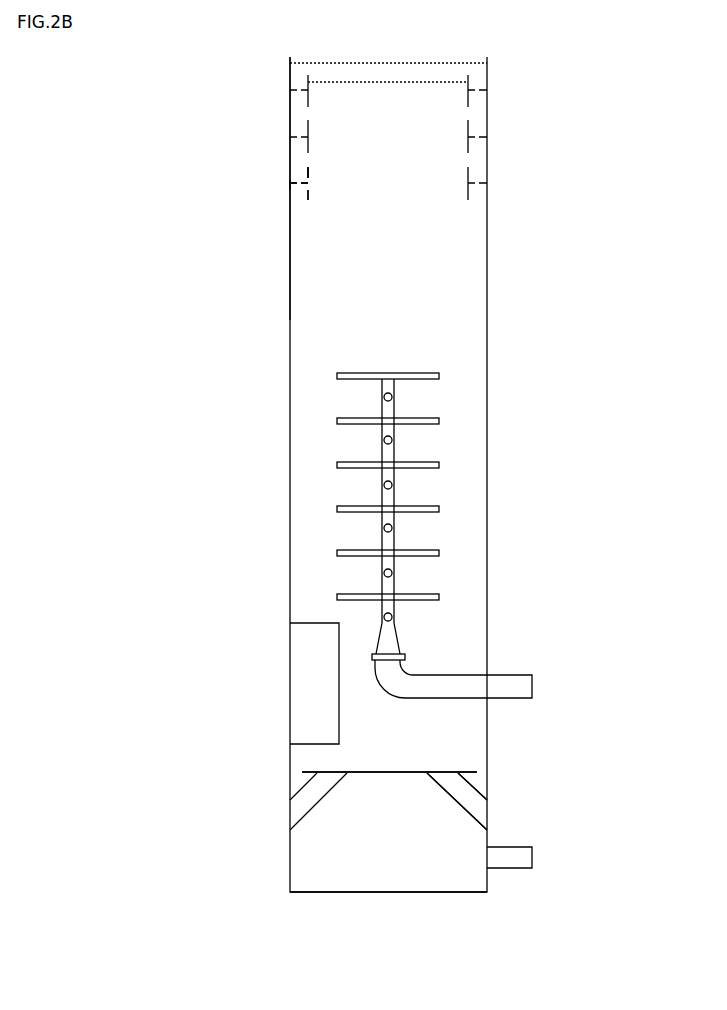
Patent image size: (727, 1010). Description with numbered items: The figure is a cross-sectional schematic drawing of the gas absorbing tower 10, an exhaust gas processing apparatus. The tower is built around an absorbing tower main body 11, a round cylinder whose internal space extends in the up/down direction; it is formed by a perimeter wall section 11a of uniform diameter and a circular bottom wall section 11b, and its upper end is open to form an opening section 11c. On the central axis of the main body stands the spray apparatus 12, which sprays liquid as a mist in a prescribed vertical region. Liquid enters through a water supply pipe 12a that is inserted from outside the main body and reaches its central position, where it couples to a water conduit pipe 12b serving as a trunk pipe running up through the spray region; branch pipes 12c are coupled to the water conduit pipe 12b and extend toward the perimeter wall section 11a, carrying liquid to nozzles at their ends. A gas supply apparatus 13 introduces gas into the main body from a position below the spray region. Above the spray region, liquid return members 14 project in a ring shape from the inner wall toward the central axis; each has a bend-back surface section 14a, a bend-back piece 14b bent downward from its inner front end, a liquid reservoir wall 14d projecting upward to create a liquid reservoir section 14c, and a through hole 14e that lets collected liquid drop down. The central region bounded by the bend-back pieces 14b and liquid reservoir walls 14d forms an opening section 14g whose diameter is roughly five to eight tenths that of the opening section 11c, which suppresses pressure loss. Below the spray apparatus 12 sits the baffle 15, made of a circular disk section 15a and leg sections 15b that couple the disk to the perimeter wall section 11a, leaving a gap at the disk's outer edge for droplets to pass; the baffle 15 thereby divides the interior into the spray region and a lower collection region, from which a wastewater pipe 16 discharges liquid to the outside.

The gas absorbing tower 10 is at (184, 75).
The absorbing tower main body 11 is at (497, 236).
The perimeter wall section 11a is at (290, 300).
The bottom wall section 11b is at (330, 892).
The opening section 11c is at (401, 55).
The spray apparatus 12 is at (390, 348).
The water supply pipe 12a is at (500, 683).
The water conduit pipe 12b is at (393, 410).
The branch pipes 12c is at (355, 373).
The gas supply apparatus 13 is at (300, 697).
The liquid return members 14 is at (362, 181).
The bend-back surface section 14a is at (300, 187).
The bend-back piece 14b is at (308, 190).
The liquid reservoir section 14c is at (302, 177).
The liquid reservoir wall 14d is at (308, 178).
The through hole 14e is at (298, 188).
The opening section 14g is at (348, 79).
The baffle 15 is at (388, 792).
The circular disk section 15a is at (385, 772).
The leg sections 15b is at (470, 800).
The wastewater pipe 16 is at (508, 855).